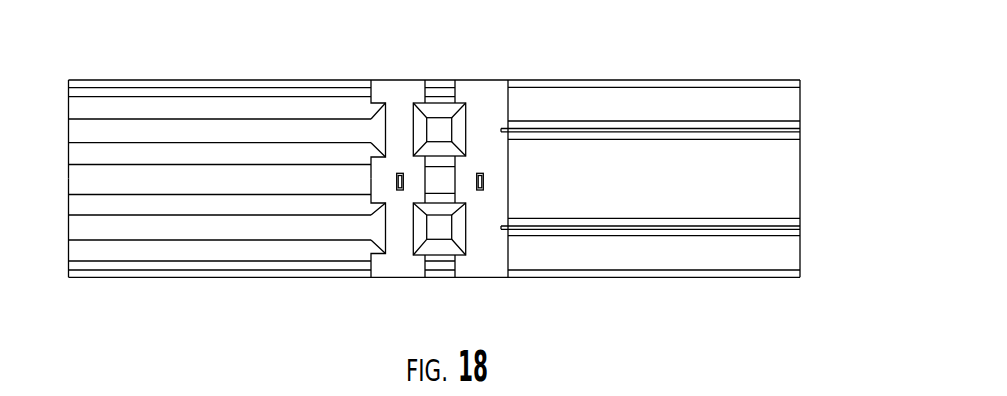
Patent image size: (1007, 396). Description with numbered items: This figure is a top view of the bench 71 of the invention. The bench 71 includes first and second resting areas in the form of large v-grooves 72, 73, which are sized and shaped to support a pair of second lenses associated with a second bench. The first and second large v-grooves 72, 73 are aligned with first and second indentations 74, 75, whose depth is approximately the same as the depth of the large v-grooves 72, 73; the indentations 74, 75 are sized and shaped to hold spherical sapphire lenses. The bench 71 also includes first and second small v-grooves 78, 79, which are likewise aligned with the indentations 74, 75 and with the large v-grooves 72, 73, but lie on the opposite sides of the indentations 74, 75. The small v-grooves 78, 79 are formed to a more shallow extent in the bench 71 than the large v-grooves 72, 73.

The bench 71 is at (632, 68).
The first large v-groove 72 is at (163, 133).
The second large v-groove 73 is at (165, 230).
The first indentation 74 is at (435, 228).
The second indentation 75 is at (442, 132).
The first small v-groove 78 is at (810, 233).
The second small v-groove 79 is at (810, 135).